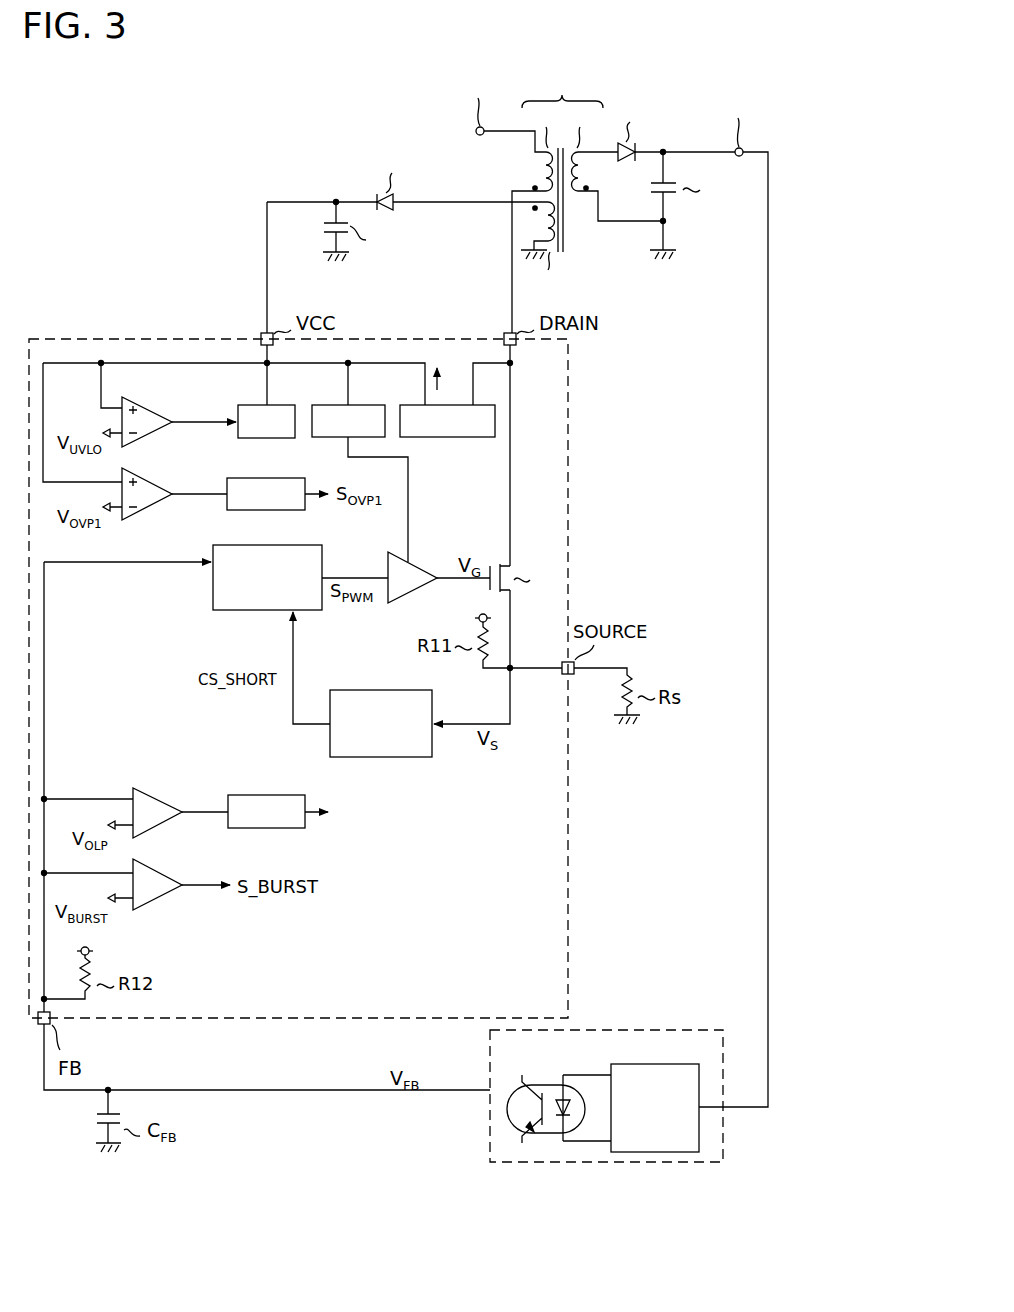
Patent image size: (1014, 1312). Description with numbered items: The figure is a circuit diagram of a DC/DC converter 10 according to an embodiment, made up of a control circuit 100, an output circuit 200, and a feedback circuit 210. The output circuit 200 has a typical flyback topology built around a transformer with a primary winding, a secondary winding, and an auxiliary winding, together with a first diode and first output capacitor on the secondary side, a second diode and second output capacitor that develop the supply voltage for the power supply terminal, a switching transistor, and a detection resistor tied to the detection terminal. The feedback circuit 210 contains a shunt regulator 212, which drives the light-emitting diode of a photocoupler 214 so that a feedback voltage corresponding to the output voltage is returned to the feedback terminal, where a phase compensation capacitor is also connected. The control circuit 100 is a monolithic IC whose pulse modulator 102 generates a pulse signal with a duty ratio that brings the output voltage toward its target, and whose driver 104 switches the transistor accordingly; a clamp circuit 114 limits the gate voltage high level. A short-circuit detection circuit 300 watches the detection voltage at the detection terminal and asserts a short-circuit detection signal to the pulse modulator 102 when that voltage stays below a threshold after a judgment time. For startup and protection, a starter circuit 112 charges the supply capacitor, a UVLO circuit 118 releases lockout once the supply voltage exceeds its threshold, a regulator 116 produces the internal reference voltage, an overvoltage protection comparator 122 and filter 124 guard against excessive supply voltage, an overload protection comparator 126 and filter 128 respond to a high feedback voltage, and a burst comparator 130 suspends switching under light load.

The DC/DC converter 10 is at (416, 1201).
The control circuit 100 is at (569, 896).
The pulse modulator 102 is at (264, 546).
The driver 104 is at (421, 564).
The starter circuit 112 is at (470, 437).
The clamp circuit 114 is at (376, 405).
The regulator 116 is at (286, 405).
The UVLO circuit 118 is at (160, 410).
The overvoltage protection comparator 122 is at (160, 482).
The filter 124 is at (266, 478).
The overload protection comparator 126 is at (167, 803).
The filter 128 is at (266, 795).
The burst comparator 130 is at (167, 875).
The output circuit 200 is at (308, 280).
The feedback circuit 210 is at (677, 1030).
The shunt regulator 212 is at (655, 1062).
The photocoupler 214 is at (542, 1080).
The short-circuit detection circuit 300 is at (414, 690).